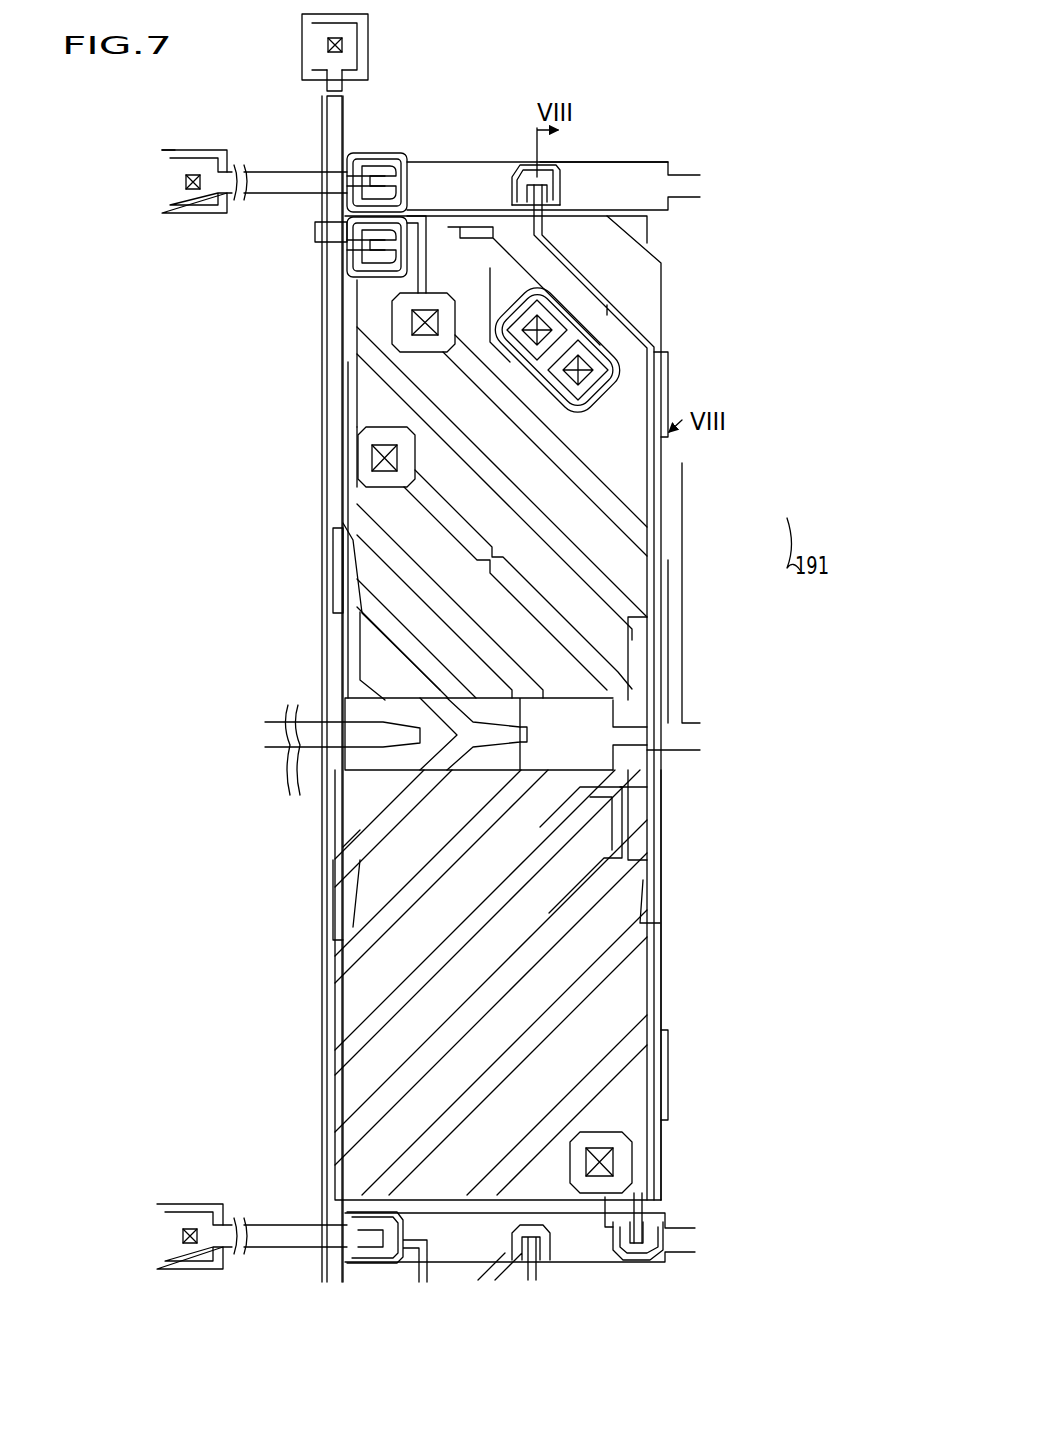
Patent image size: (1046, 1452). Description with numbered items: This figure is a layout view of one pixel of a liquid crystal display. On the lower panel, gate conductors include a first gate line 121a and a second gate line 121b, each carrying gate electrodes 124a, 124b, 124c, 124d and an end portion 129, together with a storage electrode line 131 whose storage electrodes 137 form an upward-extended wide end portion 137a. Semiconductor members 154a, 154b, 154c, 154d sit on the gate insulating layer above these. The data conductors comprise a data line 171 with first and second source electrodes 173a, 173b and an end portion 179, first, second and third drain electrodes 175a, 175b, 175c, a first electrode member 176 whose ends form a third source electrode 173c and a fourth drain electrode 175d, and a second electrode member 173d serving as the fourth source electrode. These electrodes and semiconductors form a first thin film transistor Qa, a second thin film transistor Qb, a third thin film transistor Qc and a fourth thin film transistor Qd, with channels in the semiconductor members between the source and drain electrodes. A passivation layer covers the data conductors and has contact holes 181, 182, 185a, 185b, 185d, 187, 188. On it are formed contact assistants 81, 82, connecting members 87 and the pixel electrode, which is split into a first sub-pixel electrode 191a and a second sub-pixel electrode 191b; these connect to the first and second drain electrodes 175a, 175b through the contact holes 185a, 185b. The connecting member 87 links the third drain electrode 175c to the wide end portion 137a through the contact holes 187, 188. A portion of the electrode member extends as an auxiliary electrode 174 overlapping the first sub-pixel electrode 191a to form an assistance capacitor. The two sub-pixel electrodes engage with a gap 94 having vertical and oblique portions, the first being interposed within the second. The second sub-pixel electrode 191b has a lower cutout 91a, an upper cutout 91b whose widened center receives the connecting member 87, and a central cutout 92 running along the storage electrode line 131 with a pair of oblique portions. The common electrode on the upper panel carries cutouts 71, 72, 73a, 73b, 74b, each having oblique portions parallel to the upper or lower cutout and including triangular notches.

The cutout 71 is at (355, 821).
The cutout 72 is at (343, 521).
The cutout 73a is at (625, 976).
The cutout 73b is at (620, 481).
The cutout 74b is at (585, 259).
The contact assistant 81 is at (162, 198).
The contact assistant 82 is at (368, 22).
The connecting member 87 is at (580, 346).
The lower cutout 91a is at (650, 1061).
The upper cutout 91b is at (600, 241).
The central cutout 92 is at (345, 696).
The gap 94 is at (380, 581).
The first gate line 121a is at (268, 190).
The second gate line 121b is at (262, 1250).
The first gate electrode 124a is at (338, 283).
The second gate electrode 124b is at (406, 152).
The third gate electrode 124c is at (650, 162).
The fourth gate electrode 124d is at (680, 1226).
The end portion 129 is at (165, 166).
The storage electrode line 131 is at (342, 760).
The storage electrode 137 is at (600, 691).
The wide end portion 137a is at (636, 383).
The first semiconductor member 154a is at (348, 210).
The second semiconductor member 154b is at (348, 180).
The third semiconductor member 154c is at (548, 200).
The fourth semiconductor member 154d is at (680, 1251).
The data line 171 is at (340, 651).
The first source electrode 173a is at (368, 265).
The second source electrode 173b is at (376, 194).
The third source electrode 173c is at (560, 182).
The second electrode member 173d is at (640, 1263).
The auxiliary electrode 174 is at (600, 871).
The first drain electrode 175a is at (410, 240).
The second drain electrode 175b is at (410, 176).
The third drain electrode 175c is at (538, 180).
The fourth drain electrode 175d is at (643, 1183).
The first electrode member 176 is at (830, 846).
The end portion 179 is at (357, 50).
The contact hole 181 is at (193, 190).
The contact hole 182 is at (328, 45).
The contact hole 185a is at (372, 459).
The contact hole 185b is at (410, 326).
The contact hole 185d is at (612, 1141).
The contact hole 187 is at (540, 331).
The contact hole 188 is at (602, 371).
The first sub-pixel electrode 191a is at (640, 613).
The second sub-pixel electrode 191b is at (640, 541).
The first thin film transistor Qa is at (343, 290).
The second thin film transistor Qb is at (409, 160).
The third thin film transistor Qc is at (560, 160).
The fourth thin film transistor Qd is at (613, 1268).